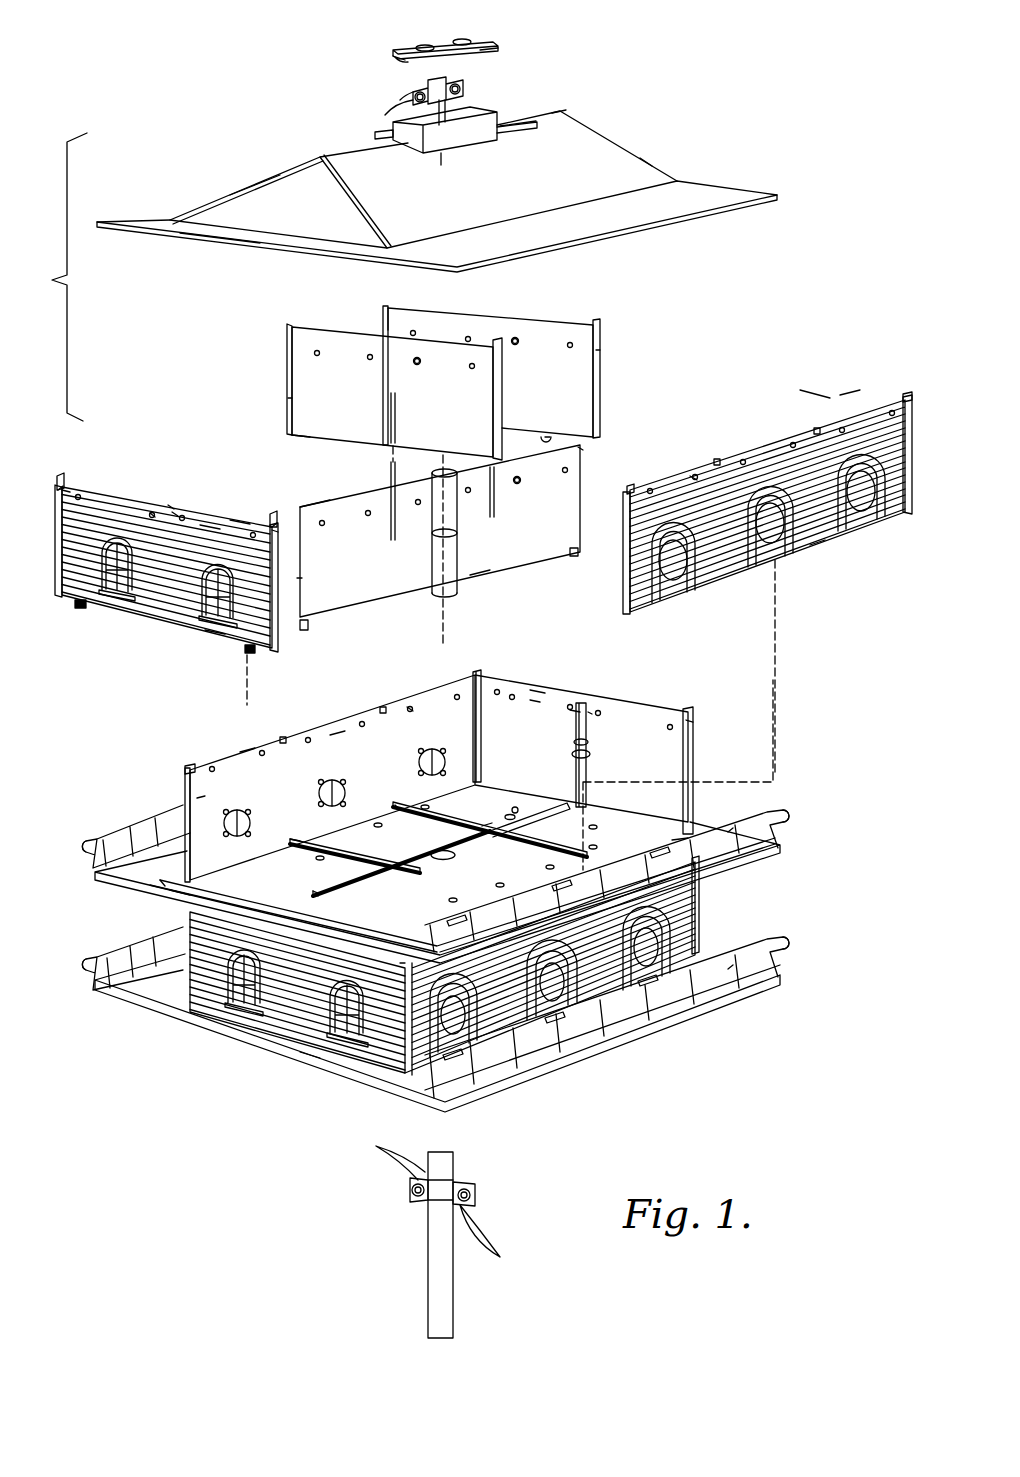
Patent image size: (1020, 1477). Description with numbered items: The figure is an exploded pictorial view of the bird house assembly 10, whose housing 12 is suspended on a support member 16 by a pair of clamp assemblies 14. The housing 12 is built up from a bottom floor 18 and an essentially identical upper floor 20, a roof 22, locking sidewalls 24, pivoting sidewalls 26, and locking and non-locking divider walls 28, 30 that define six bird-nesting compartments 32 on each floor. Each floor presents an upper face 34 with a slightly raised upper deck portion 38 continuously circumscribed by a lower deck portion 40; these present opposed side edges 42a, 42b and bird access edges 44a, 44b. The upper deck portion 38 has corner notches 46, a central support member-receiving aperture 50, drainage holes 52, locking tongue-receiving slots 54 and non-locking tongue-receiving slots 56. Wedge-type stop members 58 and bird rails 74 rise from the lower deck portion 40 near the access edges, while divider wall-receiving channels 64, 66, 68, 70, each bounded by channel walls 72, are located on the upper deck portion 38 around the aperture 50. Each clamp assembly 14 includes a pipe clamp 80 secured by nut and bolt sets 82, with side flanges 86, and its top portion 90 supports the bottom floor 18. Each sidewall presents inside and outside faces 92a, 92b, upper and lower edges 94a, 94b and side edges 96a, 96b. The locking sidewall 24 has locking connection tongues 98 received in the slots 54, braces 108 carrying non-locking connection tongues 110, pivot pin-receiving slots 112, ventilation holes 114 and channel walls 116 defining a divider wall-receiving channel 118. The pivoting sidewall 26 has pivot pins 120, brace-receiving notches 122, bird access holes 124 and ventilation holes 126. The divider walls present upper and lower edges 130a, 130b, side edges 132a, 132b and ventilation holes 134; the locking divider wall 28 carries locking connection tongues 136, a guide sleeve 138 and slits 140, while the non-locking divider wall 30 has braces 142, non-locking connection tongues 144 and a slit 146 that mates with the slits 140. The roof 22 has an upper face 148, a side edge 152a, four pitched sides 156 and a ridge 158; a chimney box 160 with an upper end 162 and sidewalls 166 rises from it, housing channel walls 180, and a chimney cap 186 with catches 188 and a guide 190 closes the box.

The bird house assembly 10 is at (832, 755).
The housing 12 is at (748, 164).
The clamp assembly 14 is at (354, 69).
The support member 16 is at (445, 1306).
The bottom floor 18 is at (204, 1028).
The upper floor 20 is at (417, 911).
The roof 22 is at (612, 150).
The locking sidewall 24 is at (187, 577).
The pivoting sidewall 26 is at (874, 415).
The locking divider wall 28 is at (495, 560).
The non-locking divider wall 30 is at (312, 340).
The bird-nesting compartment 32 is at (563, 315).
The upper face 34 is at (700, 833).
The upper deck portion 38 is at (358, 808).
The lower deck portion 40 is at (680, 843).
The side edge 42a is at (180, 893).
The side edge 42b is at (730, 830).
The bird access edge 44a is at (760, 852).
The bird access edge 44b is at (130, 847).
The non-locking tongue-receiving corner notch 46 is at (193, 878).
The support member-receiving aperture 50 is at (440, 856).
The drainage hole 52 is at (515, 807).
The locking tongue-receiving slot 54 is at (215, 893).
The non-locking tongue-receiving slot 56 is at (592, 832).
The wedge-type stop member 58 is at (657, 852).
The divider wall-receiving channel 64 is at (318, 840).
The divider wall-receiving channel 66 is at (465, 826).
The divider wall-receiving channel 68 is at (316, 890).
The divider wall-receiving channel 70 is at (506, 815).
The channel wall 72 is at (403, 806).
The bird rail 74 is at (84, 845).
The pipe clamp 80 is at (466, 84).
The nut and bolt set 82 is at (465, 92).
The side flange 86 is at (413, 100).
The top portion 90 is at (412, 90).
The inside face 92a is at (197, 799).
The outside face 92b is at (210, 530).
The upper edge 94a is at (247, 520).
The lower edge 94b is at (212, 633).
The side edge 96a is at (57, 575).
The side edge 96b is at (278, 630).
The locking connection tongue 98 is at (80, 610).
The brace 108 is at (65, 483).
The non-locking connection tongue 110 is at (62, 478).
The pivot pin-receiving slot 112 is at (66, 493).
The ventilation hole 114 is at (152, 515).
The channel wall 116 is at (175, 510).
The divider wall-receiving channel 118 is at (170, 507).
The pivot pin 120 is at (905, 398).
The brace-receiving notch 122 is at (818, 430).
The bird access hole 124 is at (675, 560).
The ventilation hole 126 is at (693, 477).
The upper edge 130a is at (397, 325).
The lower edge 130b is at (547, 436).
The side edge 132a is at (288, 390).
The side edge 132b is at (602, 352).
The ventilation hole 134 is at (520, 336).
The locking connection tongue 136 is at (308, 628).
The support member-receiving guide sleeve 138 is at (450, 553).
The divider wall-receiving slit 140 is at (393, 538).
The brace 142 is at (287, 363).
The non-locking connection tongue 144 is at (290, 325).
The divider wall-receiving slit 146 is at (391, 400).
The upper face 148 is at (645, 170).
The side edge 152a is at (215, 248).
The pitched side 156 is at (262, 190).
The ridge 158 is at (560, 113).
The chimney box 160 is at (460, 140).
The upper end 162 is at (515, 124).
The sidewall 166 is at (375, 135).
The channel wall 180 is at (441, 160).
The chimney cap 186 is at (478, 38).
The catch 188 is at (390, 55).
The guide 190 is at (492, 53).